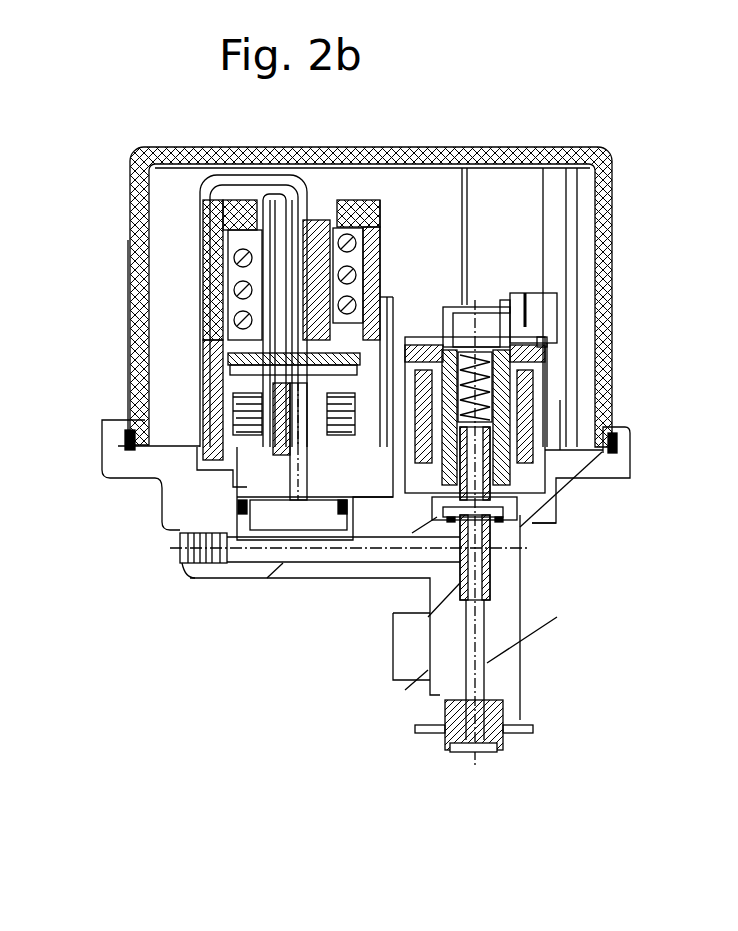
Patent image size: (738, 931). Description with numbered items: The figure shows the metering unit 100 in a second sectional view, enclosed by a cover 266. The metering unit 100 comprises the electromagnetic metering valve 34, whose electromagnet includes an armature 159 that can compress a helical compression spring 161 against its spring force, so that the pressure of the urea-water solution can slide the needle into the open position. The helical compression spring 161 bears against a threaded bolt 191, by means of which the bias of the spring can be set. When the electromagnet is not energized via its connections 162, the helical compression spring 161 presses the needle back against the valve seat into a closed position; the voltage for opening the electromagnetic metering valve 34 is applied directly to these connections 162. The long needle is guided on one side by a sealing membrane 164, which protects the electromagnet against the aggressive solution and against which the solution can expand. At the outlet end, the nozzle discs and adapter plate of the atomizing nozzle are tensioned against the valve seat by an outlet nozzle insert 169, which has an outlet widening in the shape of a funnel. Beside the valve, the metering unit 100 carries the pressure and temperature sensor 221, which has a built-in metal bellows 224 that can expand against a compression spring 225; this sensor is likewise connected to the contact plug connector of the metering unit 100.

The pressure and temperature sensor 221 is at (285, 331).
The threaded bolt 191 is at (484, 330).
The cover 266 is at (607, 231).
The connections 162 is at (523, 330).
The helical compression spring 161 is at (477, 390).
The compression spring 225 is at (233, 260).
The metal bellows 224 is at (235, 417).
The armature 159 is at (548, 484).
The metering unit 100 is at (591, 508).
The sealing membrane 164 is at (488, 520).
The electromagnetic metering valve 34 is at (512, 638).
The outlet nozzle insert 169 is at (485, 745).